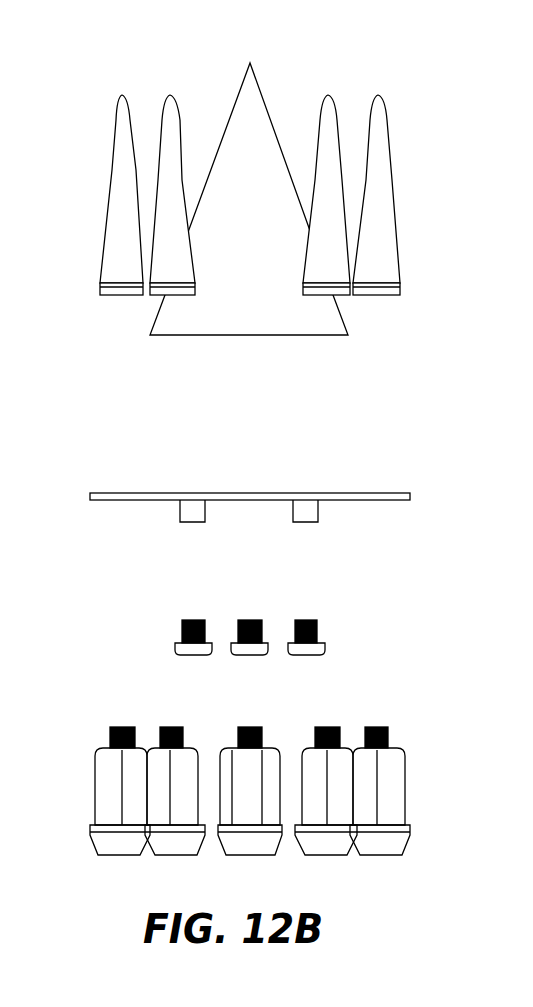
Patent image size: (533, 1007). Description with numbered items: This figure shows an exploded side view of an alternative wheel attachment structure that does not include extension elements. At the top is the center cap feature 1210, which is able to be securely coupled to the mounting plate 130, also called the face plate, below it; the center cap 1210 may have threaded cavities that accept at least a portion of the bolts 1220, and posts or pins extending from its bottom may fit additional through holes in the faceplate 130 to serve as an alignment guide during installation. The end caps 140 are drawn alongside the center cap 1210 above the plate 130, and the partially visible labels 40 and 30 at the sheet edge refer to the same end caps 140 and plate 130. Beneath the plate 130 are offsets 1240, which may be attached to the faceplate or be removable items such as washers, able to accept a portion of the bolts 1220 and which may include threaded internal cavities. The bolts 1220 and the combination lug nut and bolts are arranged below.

The plate 30 is at (7, 556).
The spike member 40 is at (7, 268).
The mounting plate 130 is at (235, 493).
The end caps 140 is at (112, 170).
The center cap feature 1210 is at (265, 105).
The bolts 1220 is at (325, 645).
The offsets 1240 is at (318, 512).